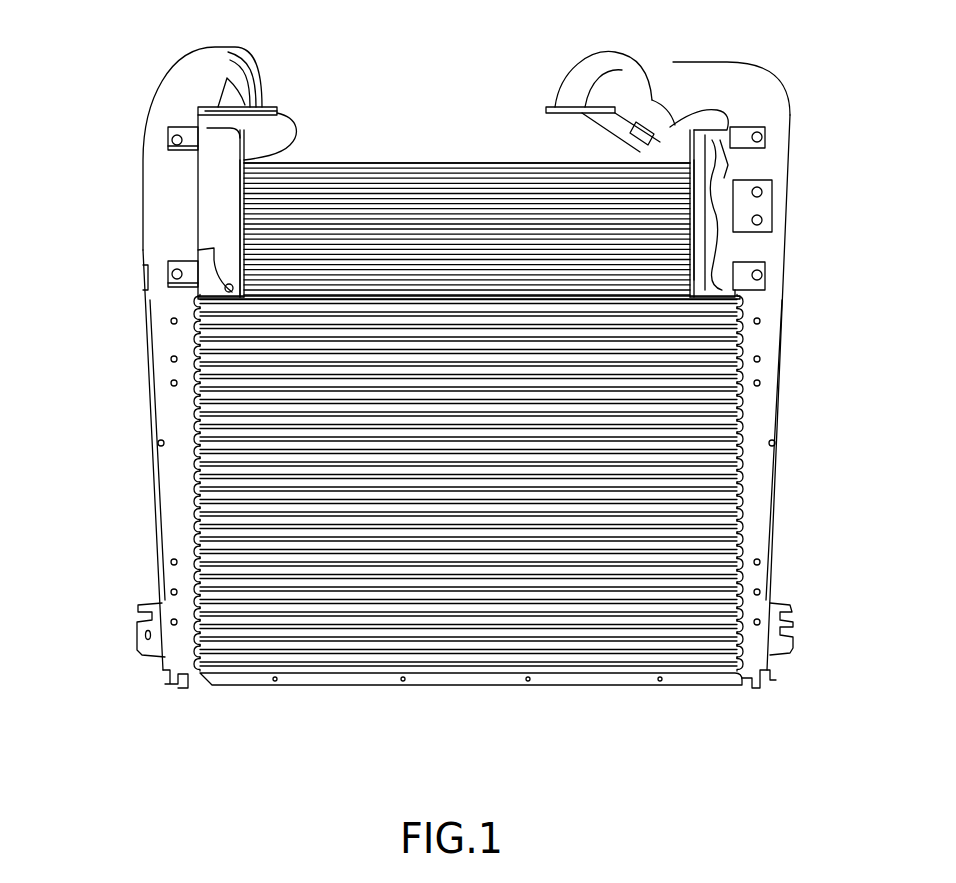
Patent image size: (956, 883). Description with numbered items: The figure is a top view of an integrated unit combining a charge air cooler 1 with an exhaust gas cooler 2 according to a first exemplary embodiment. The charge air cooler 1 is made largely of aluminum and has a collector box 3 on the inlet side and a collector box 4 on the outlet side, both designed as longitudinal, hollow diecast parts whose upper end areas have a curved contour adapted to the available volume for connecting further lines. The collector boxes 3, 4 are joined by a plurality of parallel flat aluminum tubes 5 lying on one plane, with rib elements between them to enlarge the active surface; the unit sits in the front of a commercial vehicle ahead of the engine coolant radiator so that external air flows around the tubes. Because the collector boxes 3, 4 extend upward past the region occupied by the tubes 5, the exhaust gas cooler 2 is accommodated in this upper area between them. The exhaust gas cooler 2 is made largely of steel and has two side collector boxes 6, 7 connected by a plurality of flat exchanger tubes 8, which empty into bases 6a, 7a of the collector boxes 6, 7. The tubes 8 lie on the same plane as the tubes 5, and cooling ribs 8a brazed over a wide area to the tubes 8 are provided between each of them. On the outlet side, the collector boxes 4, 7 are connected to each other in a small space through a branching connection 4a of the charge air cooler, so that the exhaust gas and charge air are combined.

The charge air cooler 1 is at (447, 698).
The exhaust gas cooler 2 is at (467, 173).
The collector box on the inlet side 3 is at (180, 491).
The collector box on the outlet side 4 is at (755, 522).
The branching connection 4a is at (633, 122).
The flat aluminum tubes 5 is at (557, 590).
The side collector box 6 is at (213, 185).
The base of collector box 6a is at (233, 239).
The side collector box 7 is at (705, 200).
The base of collector box 7a is at (698, 240).
The flat exchanger tubes 8 is at (503, 188).
The cooling ribs 8a is at (450, 162).